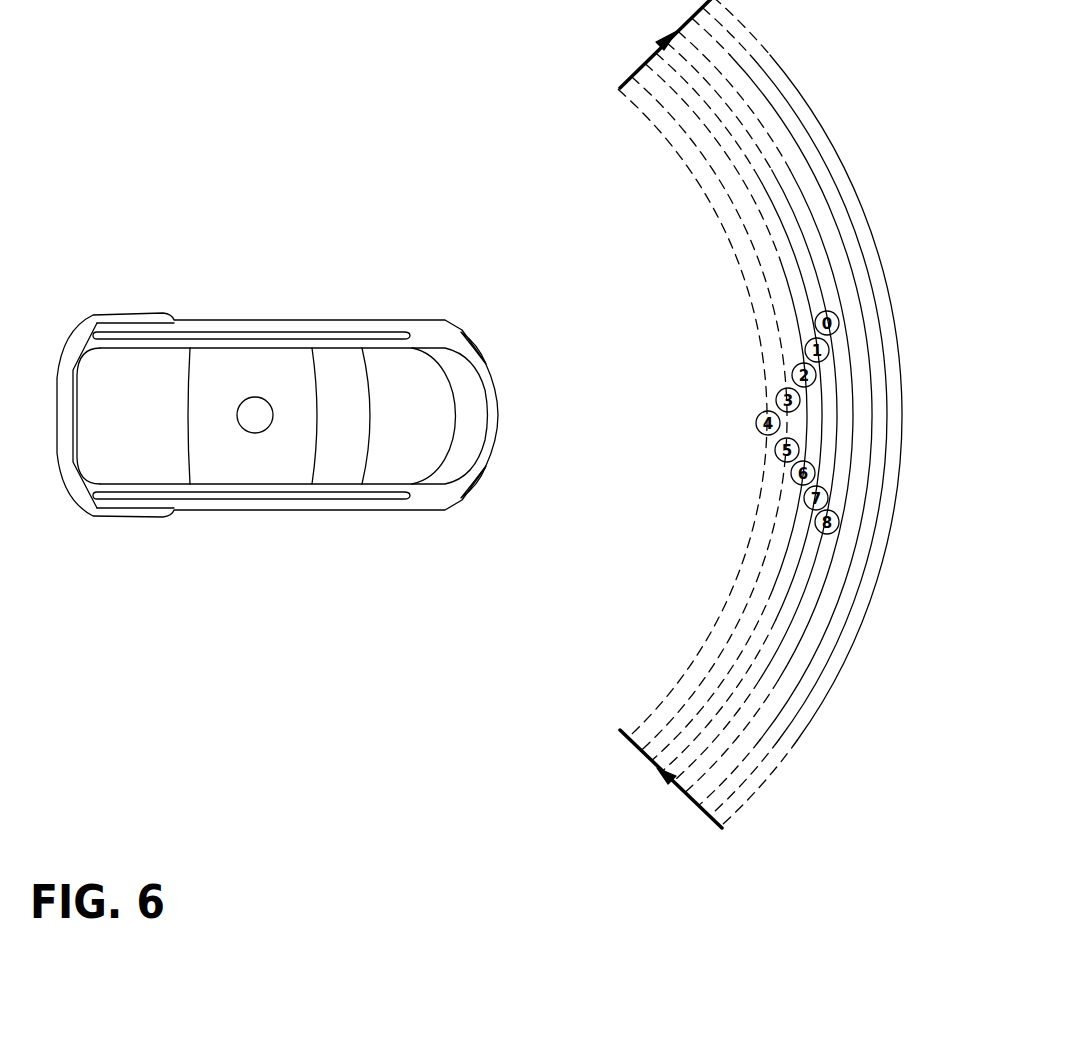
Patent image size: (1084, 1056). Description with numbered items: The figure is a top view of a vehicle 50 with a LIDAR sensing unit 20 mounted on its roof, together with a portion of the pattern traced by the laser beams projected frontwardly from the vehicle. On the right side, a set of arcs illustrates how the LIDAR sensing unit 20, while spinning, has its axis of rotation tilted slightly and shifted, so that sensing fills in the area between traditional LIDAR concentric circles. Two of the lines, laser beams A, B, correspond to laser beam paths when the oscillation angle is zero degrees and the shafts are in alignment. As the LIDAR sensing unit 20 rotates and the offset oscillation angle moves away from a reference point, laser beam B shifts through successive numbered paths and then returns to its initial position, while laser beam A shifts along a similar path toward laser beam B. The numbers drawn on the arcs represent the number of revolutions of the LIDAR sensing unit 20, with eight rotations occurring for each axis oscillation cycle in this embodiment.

The LIDAR sensing unit 20 is at (255, 415).
The vehicle 50 is at (413, 316).
The laser beam A is at (888, 282).
The laser beam B is at (818, 278).